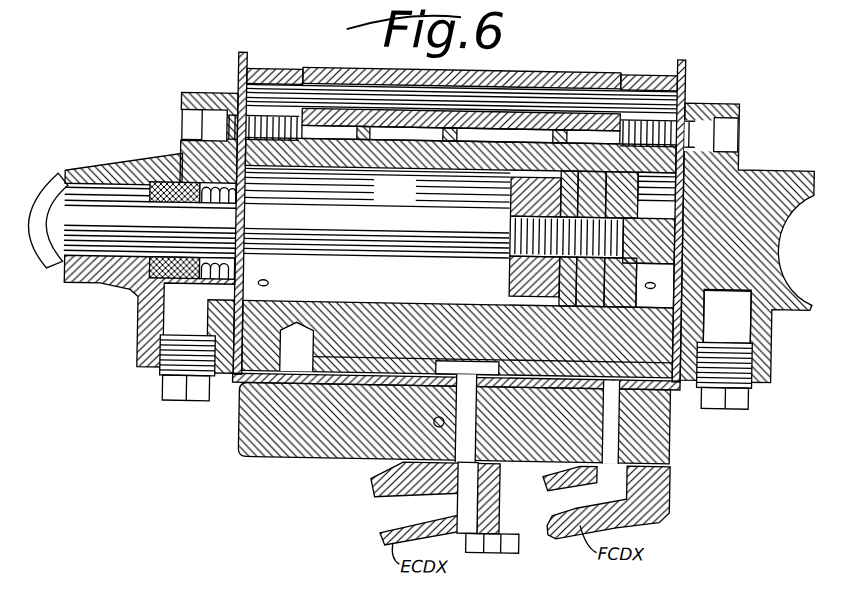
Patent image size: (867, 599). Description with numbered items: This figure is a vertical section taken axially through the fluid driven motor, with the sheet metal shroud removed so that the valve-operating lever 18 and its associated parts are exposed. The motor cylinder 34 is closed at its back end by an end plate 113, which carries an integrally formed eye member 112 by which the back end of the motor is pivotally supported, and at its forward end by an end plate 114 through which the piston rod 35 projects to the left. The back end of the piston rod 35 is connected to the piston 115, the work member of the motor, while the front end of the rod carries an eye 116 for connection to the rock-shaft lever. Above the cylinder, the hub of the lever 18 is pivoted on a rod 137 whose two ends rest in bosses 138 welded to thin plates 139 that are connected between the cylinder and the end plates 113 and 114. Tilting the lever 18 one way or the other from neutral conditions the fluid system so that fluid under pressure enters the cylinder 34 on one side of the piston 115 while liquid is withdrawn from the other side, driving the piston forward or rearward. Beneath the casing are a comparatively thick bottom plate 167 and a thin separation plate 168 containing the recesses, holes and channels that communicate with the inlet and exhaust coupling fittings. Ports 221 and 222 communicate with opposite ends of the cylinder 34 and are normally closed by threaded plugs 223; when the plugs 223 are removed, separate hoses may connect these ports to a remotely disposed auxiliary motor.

The valve-operating lever 18 is at (503, 73).
The motor cylinder 34 is at (408, 201).
The piston rod 35 is at (106, 193).
The eye member 112 is at (776, 179).
The end plate 113 is at (738, 100).
The end plate 114 is at (183, 157).
The piston 115 is at (580, 166).
The eye 116 is at (40, 183).
The rod 137 is at (534, 96).
The bosses 138 is at (279, 72).
The thin plates 139 is at (234, 57).
The bottom plate 167 is at (244, 444).
The separation plate 168 is at (230, 387).
The port 221 is at (170, 320).
The port 222 is at (738, 331).
The threaded plugs 223 is at (160, 385).